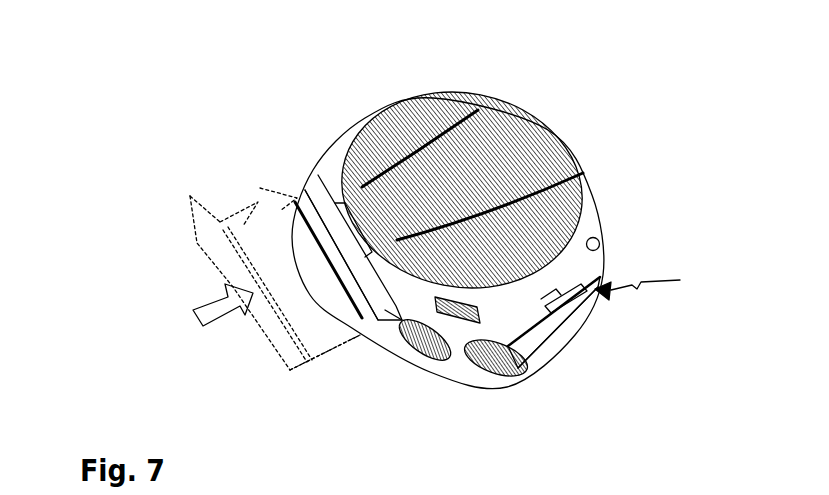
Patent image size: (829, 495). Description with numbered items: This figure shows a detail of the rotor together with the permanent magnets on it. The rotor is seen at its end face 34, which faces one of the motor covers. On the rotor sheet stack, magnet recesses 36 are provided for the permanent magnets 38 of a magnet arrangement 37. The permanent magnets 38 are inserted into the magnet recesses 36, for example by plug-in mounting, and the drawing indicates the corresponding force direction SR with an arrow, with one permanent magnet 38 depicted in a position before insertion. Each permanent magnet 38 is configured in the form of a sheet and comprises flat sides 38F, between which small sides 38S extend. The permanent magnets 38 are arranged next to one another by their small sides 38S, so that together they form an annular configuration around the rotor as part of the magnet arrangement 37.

The end face 34 is at (335, 153).
The magnet recesses 36 is at (402, 322).
The magnet arrangement 37 is at (652, 284).
The permanent magnets 38 is at (318, 212).
The flat sides 38F is at (245, 213).
The small sides 38S is at (327, 362).
The force direction SR is at (213, 307).